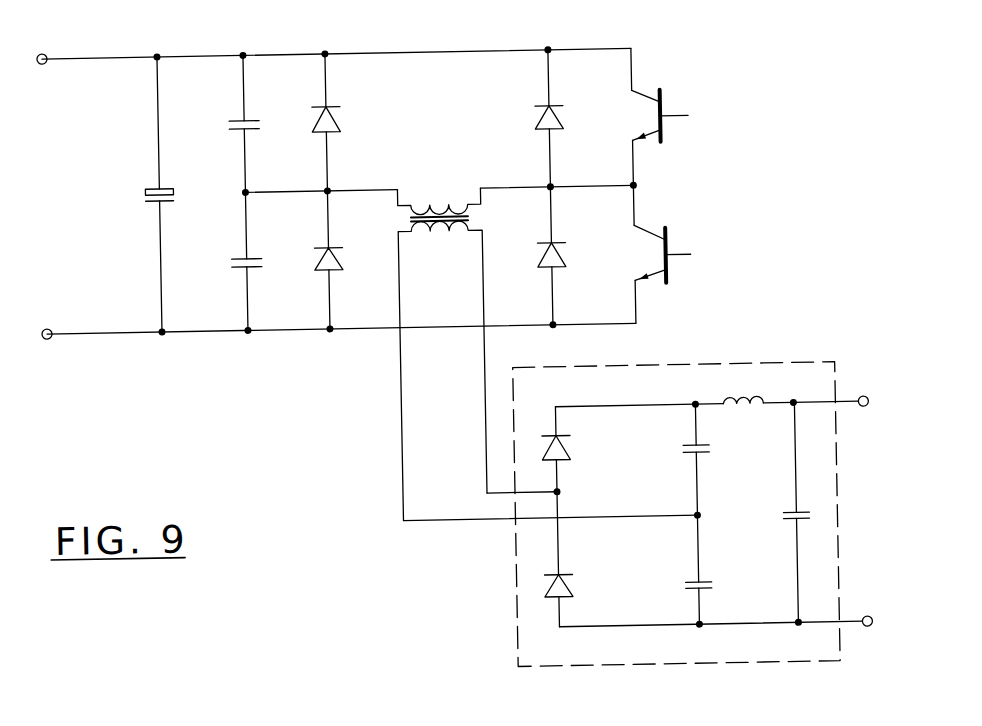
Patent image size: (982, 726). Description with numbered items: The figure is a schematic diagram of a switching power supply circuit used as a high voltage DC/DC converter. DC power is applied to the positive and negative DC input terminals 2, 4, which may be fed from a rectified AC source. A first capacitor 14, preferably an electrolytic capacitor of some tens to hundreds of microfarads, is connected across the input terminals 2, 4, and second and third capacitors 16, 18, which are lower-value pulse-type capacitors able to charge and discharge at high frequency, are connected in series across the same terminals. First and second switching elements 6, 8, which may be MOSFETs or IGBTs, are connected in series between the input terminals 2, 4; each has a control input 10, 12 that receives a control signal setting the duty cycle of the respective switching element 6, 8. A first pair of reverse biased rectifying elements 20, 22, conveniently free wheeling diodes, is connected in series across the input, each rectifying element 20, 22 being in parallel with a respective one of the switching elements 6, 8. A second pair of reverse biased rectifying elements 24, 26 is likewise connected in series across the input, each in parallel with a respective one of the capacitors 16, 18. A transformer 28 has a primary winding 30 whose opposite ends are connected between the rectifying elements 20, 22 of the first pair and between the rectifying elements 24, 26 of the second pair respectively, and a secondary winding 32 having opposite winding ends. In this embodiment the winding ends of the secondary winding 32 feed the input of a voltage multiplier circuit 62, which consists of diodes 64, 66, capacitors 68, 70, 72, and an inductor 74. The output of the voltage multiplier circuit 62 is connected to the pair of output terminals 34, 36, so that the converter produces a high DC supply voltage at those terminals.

The positive DC input terminal 2 is at (47, 62).
The negative DC input terminal 4 is at (48, 327).
The first switching element 6 is at (693, 115).
The second switching element 8 is at (697, 253).
The control input 10 is at (683, 125).
The control input 12 is at (683, 264).
The first capacitor 14 is at (155, 187).
The second capacitor 16 is at (241, 119).
The third capacitor 18 is at (241, 259).
The rectifying element 20 is at (542, 129).
The rectifying element 22 is at (566, 268).
The rectifying element 24 is at (316, 131).
The rectifying element 26 is at (316, 269).
The transformer 28 is at (535, 320).
The primary winding 30 is at (447, 208).
The secondary winding 32 is at (434, 240).
The output terminal 34 is at (862, 409).
The output terminal 36 is at (864, 629).
The voltage multiplier circuit 62 is at (687, 474).
The diode 64 is at (568, 462).
The diode 66 is at (568, 594).
The capacitor 68 is at (688, 468).
The capacitor 70 is at (688, 595).
The capacitor 72 is at (785, 537).
The inductor 74 is at (749, 422).